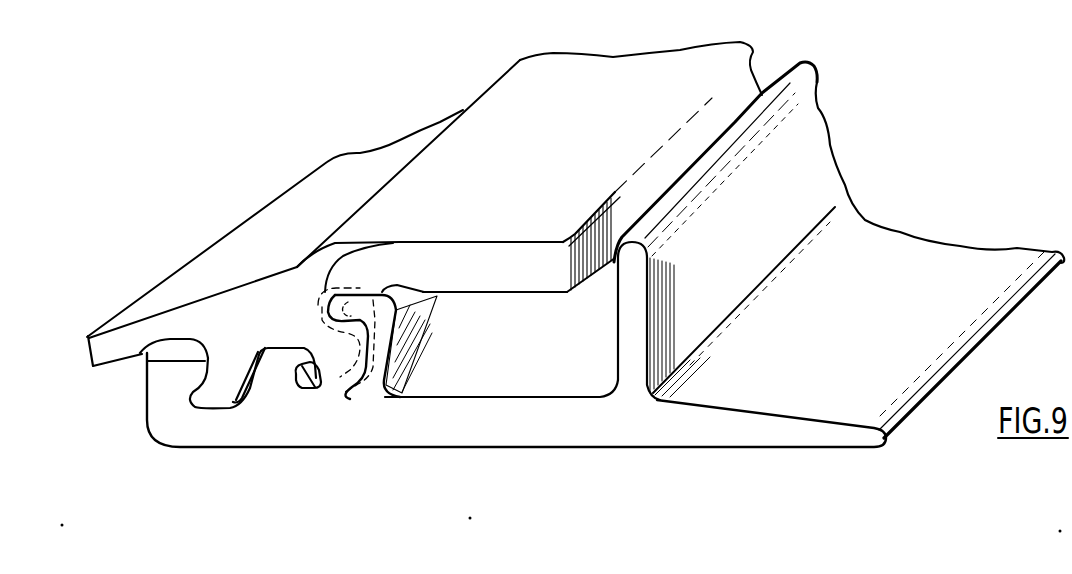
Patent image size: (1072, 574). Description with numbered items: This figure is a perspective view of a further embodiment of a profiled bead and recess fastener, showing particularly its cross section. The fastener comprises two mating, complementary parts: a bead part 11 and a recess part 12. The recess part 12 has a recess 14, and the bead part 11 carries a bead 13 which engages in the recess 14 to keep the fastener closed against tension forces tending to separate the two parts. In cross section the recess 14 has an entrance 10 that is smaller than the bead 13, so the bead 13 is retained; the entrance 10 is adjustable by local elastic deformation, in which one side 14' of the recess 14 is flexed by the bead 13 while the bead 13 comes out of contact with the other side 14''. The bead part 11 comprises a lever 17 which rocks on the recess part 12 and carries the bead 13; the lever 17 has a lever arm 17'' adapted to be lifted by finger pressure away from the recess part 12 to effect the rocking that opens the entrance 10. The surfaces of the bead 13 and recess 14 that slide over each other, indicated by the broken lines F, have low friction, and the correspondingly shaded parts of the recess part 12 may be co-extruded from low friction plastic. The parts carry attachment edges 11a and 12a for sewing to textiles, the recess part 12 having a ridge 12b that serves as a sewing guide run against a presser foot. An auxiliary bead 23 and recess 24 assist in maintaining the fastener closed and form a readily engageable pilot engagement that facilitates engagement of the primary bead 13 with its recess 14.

The entrance 10 is at (315, 343).
The bead part 11 is at (497, 117).
The attachment edge 11a is at (122, 337).
The recess part 12 is at (526, 430).
The attachment edge 12a is at (967, 273).
The ridge 12b is at (817, 137).
The bead 13 is at (323, 385).
The recess 14 is at (379, 395).
The side of the recess 14' is at (316, 256).
The other side of the recess 14'' is at (254, 440).
The lever 17 is at (361, 185).
The lever arm 17'' is at (504, 195).
The auxiliary bead 23 is at (212, 382).
The auxiliary recess 24 is at (260, 376).
The broken lines indicating low friction surfaces F is at (349, 302).